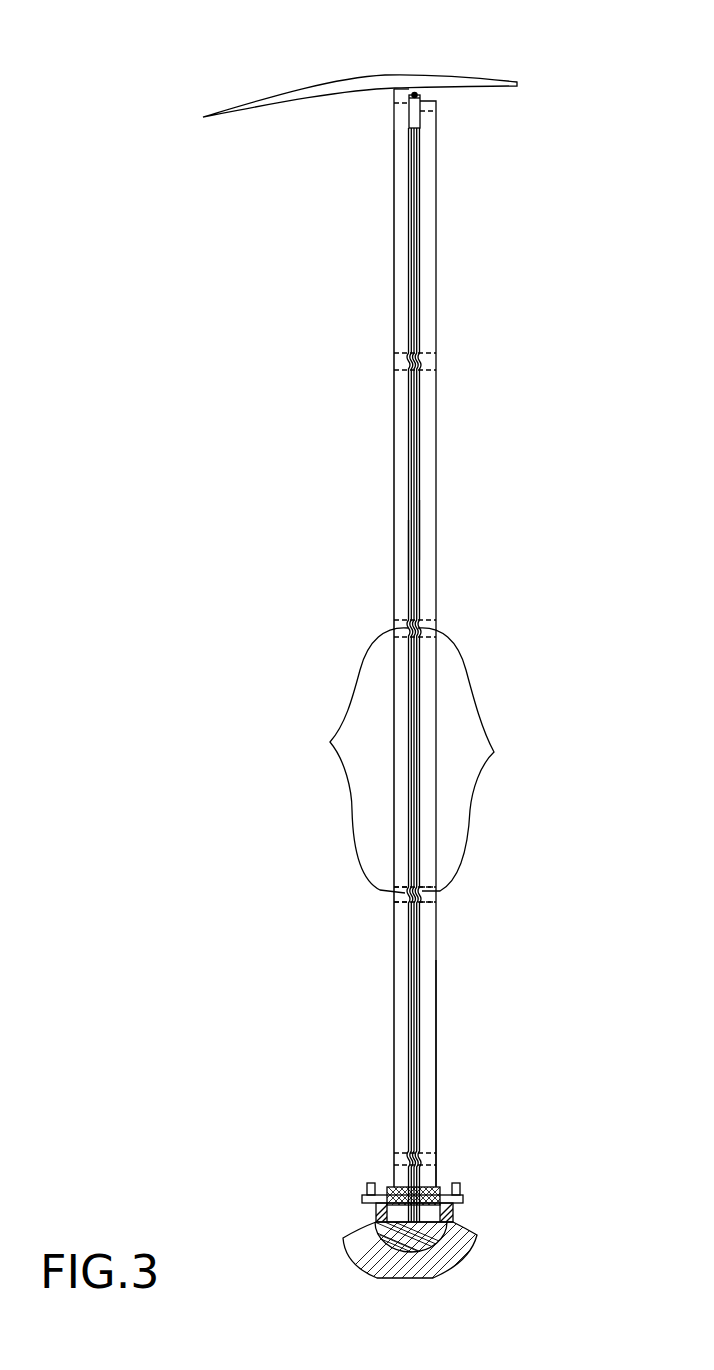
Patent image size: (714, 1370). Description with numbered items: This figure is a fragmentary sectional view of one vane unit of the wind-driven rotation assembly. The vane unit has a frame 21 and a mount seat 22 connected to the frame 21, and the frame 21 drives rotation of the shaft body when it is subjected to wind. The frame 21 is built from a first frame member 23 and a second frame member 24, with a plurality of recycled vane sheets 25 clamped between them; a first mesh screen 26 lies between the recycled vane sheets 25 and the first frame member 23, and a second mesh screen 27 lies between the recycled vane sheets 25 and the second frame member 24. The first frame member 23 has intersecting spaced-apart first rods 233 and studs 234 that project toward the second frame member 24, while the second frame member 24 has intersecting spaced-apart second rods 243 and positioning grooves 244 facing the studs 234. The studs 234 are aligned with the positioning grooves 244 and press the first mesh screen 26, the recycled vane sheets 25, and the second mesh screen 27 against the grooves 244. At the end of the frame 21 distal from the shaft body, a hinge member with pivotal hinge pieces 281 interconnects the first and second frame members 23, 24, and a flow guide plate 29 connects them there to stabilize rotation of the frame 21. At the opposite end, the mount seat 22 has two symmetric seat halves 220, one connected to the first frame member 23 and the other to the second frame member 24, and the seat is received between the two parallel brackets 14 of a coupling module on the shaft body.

The flow guide plate 29 is at (318, 88).
The pivotal hinge piece 281 is at (421, 105).
The recycled vane sheets 25 is at (417, 385).
The first frame member 23 is at (437, 457).
The second frame member 24 is at (395, 483).
The first mesh screen 26 is at (420, 523).
The second mesh screen 27 is at (408, 538).
The positioning grooves 244 is at (343, 760).
The studs 234 is at (484, 759).
The second rods 243 is at (402, 947).
The first rods 233 is at (422, 897).
The frame 21 is at (445, 1018).
The brackets 14 is at (457, 1222).
The mount seat 22 is at (375, 1240).
The seat halves 220 is at (403, 1250).